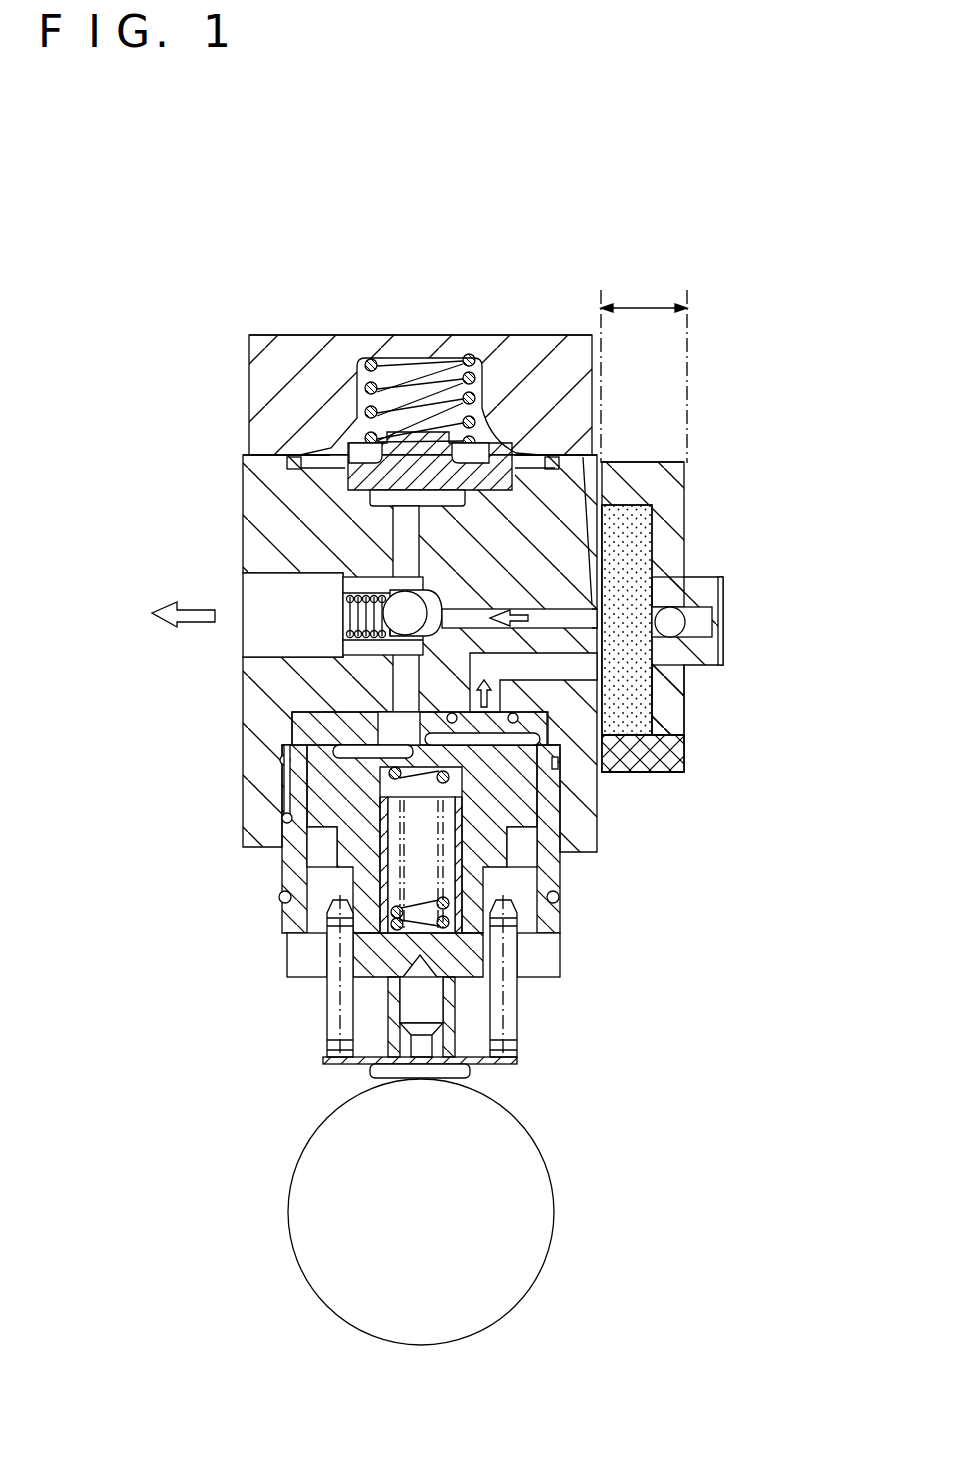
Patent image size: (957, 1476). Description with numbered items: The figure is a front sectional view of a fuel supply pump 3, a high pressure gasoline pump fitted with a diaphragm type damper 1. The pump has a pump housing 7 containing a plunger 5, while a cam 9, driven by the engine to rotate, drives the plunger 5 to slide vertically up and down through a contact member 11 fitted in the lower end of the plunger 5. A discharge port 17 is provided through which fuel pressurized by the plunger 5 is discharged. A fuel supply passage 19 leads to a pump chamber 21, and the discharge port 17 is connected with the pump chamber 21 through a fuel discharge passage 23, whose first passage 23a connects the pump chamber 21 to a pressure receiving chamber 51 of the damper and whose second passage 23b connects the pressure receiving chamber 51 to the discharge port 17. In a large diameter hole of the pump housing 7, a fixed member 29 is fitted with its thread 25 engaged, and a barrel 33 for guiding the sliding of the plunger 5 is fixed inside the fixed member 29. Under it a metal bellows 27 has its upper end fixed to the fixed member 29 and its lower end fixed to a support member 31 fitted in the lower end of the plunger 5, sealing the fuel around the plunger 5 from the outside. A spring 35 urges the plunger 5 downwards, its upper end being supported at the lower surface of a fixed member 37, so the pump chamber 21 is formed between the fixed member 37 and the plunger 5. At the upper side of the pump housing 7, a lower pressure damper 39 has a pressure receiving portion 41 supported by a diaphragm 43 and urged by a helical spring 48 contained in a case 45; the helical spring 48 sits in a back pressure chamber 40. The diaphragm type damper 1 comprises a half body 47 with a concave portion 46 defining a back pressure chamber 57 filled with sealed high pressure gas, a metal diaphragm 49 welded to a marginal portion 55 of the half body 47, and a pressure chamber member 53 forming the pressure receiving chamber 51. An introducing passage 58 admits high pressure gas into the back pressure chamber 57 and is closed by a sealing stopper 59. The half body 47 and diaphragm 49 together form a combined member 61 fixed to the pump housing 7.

The diaphragm type damper 1 is at (672, 472).
The fuel supply pump 3 is at (724, 296).
The plunger 5 is at (385, 962).
The pump housing 7 is at (585, 826).
The cam 9 is at (548, 1216).
The contact member 11 is at (374, 1072).
The discharge port 17 is at (272, 645).
The fuel supply passage 19 is at (400, 535).
The pump chamber 21 is at (565, 862).
The fuel discharge passage 23 is at (777, 686).
The first passage 23a is at (596, 665).
The second passage 23b is at (598, 620).
The thread 25 is at (300, 756).
The bellows 27 is at (328, 1033).
The fixed member 29 is at (560, 900).
The support member 31 is at (520, 1060).
The barrel 33 is at (298, 858).
The spring 35 is at (342, 925).
The fixed member 37 is at (300, 772).
The lower pressure damper 39 is at (492, 333).
The back pressure chamber 40 is at (502, 447).
The pressure receiving portion 41 is at (366, 495).
The diaphragm 43 is at (330, 468).
The case 45 is at (327, 345).
The concave portion 46 is at (665, 775).
The half body 47 is at (670, 740).
The helical spring 48 is at (372, 382).
The diaphragm 49 is at (640, 545).
The pressure receiving chamber 51 is at (680, 632).
The pressure chamber member 53 is at (655, 505).
The marginal portion 55 is at (608, 762).
The back pressure chamber 57 is at (670, 585).
The introducing passage 58 is at (712, 624).
The sealing stopper 59 is at (724, 596).
The combined member 61 is at (616, 462).